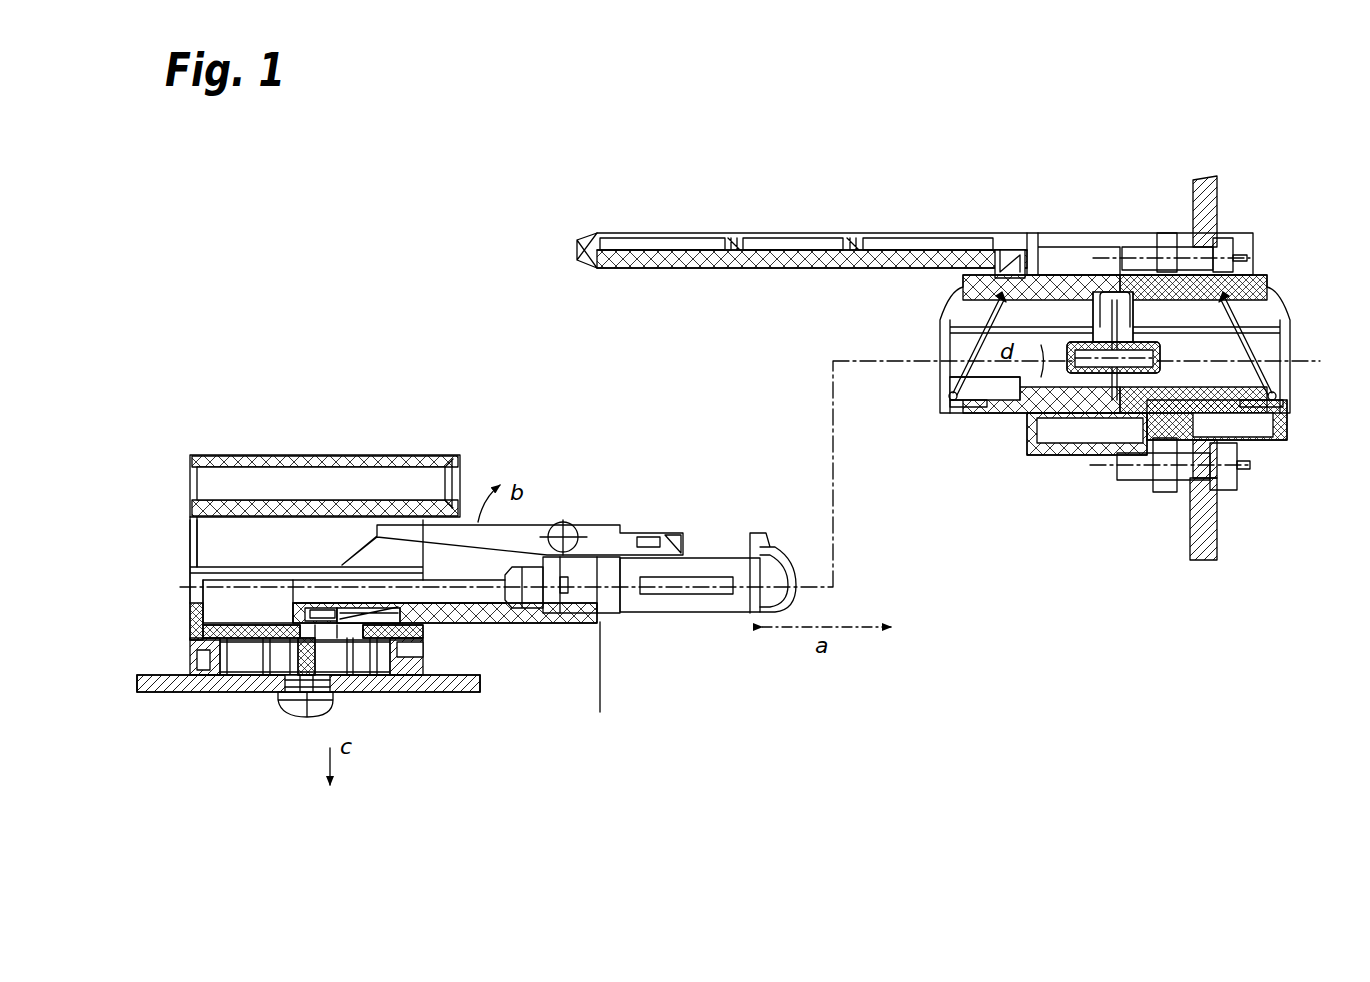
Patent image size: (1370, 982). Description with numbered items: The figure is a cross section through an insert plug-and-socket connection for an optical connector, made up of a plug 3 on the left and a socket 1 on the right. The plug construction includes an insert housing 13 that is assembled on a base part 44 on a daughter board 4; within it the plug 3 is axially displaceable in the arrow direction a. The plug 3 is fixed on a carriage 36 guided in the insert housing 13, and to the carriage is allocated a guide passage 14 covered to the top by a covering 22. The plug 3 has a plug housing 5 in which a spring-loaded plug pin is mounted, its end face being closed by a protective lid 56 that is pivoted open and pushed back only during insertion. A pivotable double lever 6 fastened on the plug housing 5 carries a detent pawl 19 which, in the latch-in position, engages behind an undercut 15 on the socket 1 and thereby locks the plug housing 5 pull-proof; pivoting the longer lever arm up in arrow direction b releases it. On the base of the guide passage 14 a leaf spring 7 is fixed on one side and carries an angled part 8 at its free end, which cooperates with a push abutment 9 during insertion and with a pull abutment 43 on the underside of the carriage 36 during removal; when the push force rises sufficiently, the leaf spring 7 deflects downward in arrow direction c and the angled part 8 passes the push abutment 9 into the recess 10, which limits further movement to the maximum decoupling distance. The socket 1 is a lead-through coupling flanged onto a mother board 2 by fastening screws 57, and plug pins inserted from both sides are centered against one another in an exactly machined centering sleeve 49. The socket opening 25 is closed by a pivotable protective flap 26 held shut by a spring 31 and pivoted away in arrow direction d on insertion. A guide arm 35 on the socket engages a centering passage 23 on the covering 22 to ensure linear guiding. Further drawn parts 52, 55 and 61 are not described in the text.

The socket 1 is at (1093, 168).
The mother board 2 is at (1210, 185).
The plug 3 is at (603, 440).
The daughter board 4 is at (200, 695).
The plug housing 5 is at (697, 600).
The double lever 6 is at (600, 525).
The leaf spring 7 is at (358, 695).
The angled part 8 is at (315, 603).
The push abutment 9 is at (392, 692).
The recess 10 is at (380, 610).
The insert housing 13 is at (207, 540).
The guide passage 14 is at (246, 600).
The undercut 15 is at (1005, 277).
The detent pawl 19 is at (667, 532).
The covering 22 is at (437, 458).
The centering passage 23 is at (470, 472).
The socket opening 25 is at (953, 343).
The protective flap 26 is at (955, 303).
The spring 31 is at (945, 408).
The guide arm 35 is at (703, 240).
The carriage 36 is at (540, 626).
The pull abutment 43 is at (287, 600).
The base part 44 is at (230, 665).
The centering sleeve 49 is at (1110, 345).
The coupling piece 52 is at (1083, 340).
The fastening screw 55 is at (1165, 472).
The protective lid 56 is at (793, 600).
The fastening screws 57 is at (1237, 250).
The screw 61 is at (292, 712).